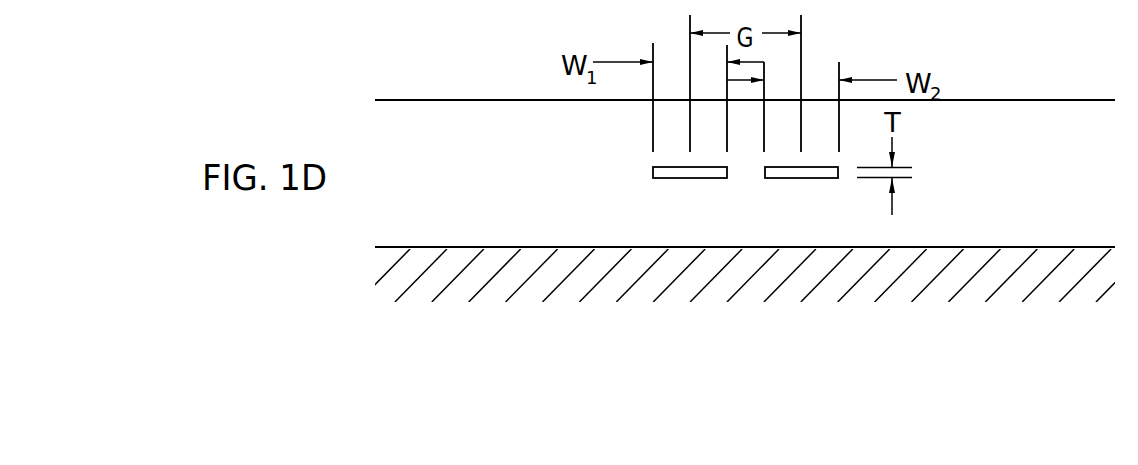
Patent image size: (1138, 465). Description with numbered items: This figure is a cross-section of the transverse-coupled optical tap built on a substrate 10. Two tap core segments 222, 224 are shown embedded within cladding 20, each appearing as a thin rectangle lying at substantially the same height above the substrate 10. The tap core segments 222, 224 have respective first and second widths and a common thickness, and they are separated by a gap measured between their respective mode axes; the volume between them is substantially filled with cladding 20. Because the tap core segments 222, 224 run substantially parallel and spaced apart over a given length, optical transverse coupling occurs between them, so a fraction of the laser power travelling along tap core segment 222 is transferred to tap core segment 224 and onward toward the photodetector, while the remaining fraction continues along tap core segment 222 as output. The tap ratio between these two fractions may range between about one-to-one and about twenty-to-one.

The substrate 10 is at (552, 290).
The cladding 20 is at (463, 190).
The tap core segment 222 is at (690, 178).
The tap core segment 224 is at (798, 178).